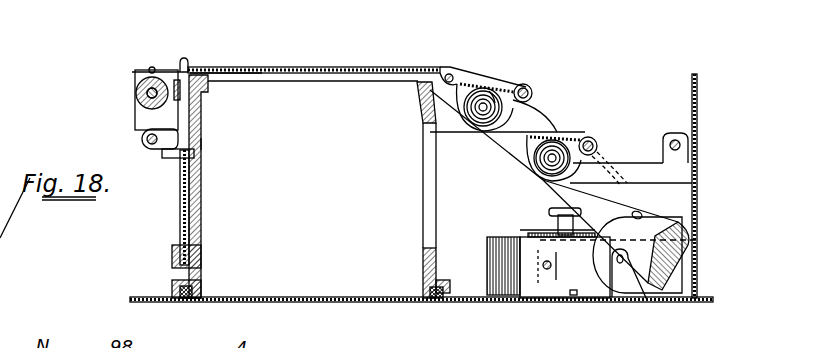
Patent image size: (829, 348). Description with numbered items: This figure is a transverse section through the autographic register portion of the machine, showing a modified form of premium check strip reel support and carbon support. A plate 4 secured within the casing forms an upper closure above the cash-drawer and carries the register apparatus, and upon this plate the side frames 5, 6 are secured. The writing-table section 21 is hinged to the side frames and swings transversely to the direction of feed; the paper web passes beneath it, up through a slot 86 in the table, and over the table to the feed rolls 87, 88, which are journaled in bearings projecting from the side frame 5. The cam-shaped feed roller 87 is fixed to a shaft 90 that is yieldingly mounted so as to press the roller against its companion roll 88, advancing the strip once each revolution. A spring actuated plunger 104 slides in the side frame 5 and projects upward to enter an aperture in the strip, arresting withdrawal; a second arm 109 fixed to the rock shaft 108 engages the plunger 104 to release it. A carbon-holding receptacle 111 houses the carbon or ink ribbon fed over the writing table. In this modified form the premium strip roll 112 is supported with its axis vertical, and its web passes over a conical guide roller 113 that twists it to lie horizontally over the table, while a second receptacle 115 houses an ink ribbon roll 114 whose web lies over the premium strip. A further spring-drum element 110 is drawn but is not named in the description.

The plate 4 is at (369, 302).
The side frame 5 is at (203, 258).
The side frame 6 is at (418, 260).
The writing-table section 21 is at (348, 68).
The slot 86 is at (266, 67).
The feed roller 87 is at (143, 107).
The feed roll 88 is at (151, 66).
The shaft 90 is at (136, 96).
The plunger 104 is at (203, 143).
The rock shaft 108 is at (146, 138).
The second arm 109 is at (152, 150).
The spring drum 110 is at (531, 89).
The carbon-holding receptacle 111 is at (497, 121).
The premium strip roll 112 is at (576, 296).
The conical guide roller 113 is at (647, 260).
The ink ribbon roll 114 is at (578, 131).
The ink ribbon receptacle 115 is at (603, 157).